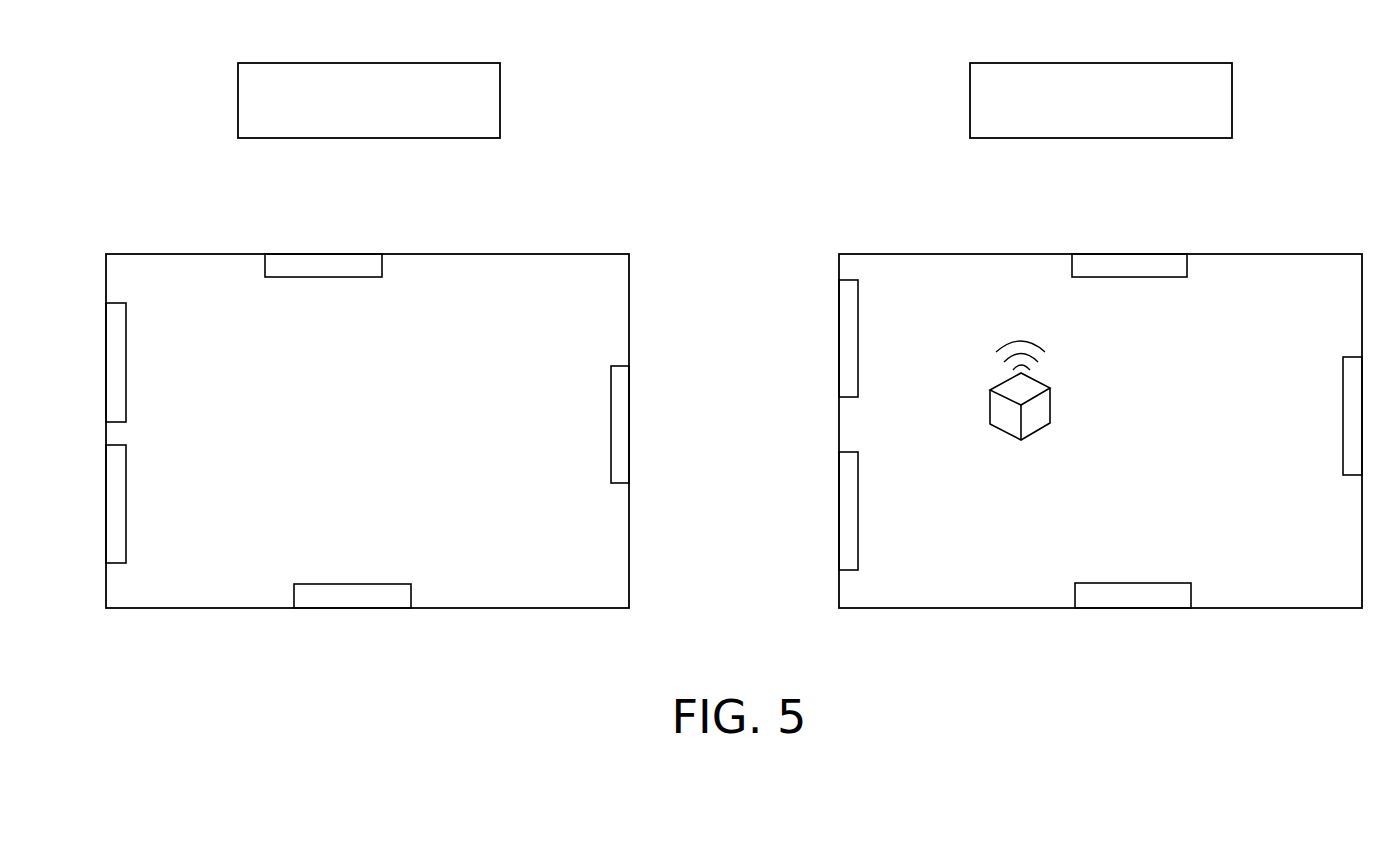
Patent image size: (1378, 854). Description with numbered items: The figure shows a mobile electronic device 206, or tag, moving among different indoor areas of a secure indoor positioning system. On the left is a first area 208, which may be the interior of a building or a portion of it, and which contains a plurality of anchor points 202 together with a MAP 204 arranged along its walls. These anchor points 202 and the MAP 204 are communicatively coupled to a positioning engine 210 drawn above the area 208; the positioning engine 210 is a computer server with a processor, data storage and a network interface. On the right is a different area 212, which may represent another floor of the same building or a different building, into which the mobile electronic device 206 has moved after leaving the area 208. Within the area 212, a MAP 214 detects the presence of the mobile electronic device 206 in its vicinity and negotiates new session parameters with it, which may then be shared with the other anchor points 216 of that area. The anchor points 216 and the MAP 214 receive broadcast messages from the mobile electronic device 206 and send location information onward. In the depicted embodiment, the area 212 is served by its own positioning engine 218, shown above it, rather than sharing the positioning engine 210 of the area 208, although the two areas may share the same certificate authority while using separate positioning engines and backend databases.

The anchor points 202 is at (322, 278).
The MAP 204 is at (126, 363).
The mobile electronic device 206 is at (1050, 404).
The area 208 is at (484, 254).
The positioning engine 210 is at (373, 62).
The area 212 is at (1216, 254).
The MAP 214 is at (858, 338).
The anchor points 216 is at (1131, 278).
The positioning engine 218 is at (1104, 62).